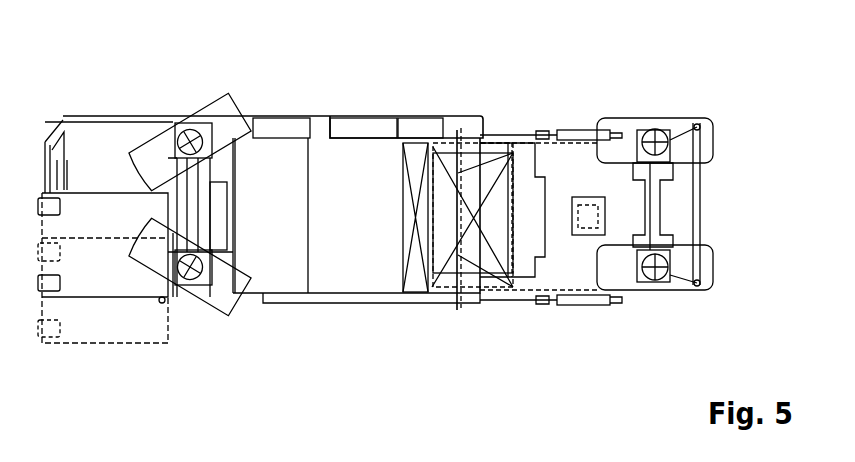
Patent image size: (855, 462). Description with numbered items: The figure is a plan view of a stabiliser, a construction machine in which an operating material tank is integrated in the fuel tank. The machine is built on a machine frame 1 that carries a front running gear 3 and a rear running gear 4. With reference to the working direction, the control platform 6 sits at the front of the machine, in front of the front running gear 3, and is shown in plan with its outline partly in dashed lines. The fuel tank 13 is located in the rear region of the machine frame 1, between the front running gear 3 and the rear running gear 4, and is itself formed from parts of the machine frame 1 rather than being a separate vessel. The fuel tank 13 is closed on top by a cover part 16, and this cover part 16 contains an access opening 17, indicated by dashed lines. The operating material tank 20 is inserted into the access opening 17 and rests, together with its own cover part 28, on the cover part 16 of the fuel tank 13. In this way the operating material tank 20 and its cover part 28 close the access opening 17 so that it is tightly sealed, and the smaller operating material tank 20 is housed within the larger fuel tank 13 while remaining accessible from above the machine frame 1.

The machine frame 1 is at (431, 98).
The front running gear 3 is at (190, 312).
The rear running gear 4 is at (722, 130).
The control platform 6 is at (100, 338).
The fuel tank 13 is at (575, 168).
The cover part 16 is at (622, 188).
The access opening 17 is at (588, 227).
The operating material tank 20 is at (603, 186).
The cover part 28 is at (577, 235).